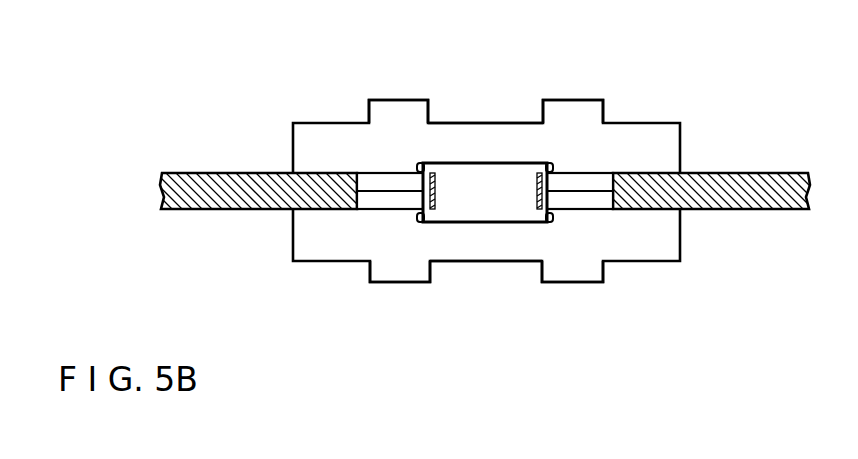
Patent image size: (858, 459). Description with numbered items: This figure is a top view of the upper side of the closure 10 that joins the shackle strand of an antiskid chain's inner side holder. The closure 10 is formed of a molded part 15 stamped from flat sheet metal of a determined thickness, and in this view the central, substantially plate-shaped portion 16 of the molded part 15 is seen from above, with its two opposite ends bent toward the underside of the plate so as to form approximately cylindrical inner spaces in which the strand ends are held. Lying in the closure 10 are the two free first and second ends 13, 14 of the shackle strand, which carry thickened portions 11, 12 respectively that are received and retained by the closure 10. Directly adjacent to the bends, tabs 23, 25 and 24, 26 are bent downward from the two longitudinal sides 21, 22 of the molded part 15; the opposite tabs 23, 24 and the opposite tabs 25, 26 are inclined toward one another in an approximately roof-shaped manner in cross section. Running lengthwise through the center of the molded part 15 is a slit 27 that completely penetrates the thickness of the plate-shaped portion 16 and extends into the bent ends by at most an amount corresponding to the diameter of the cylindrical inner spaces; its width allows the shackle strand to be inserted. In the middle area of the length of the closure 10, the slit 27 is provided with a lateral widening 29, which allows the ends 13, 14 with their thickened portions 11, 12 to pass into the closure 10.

The closure 10 is at (740, 86).
The thickened portion 11 is at (378, 202).
The thickened portion 12 is at (588, 200).
The first end 13 is at (205, 195).
The second end 14 is at (742, 207).
The molded part 15 is at (605, 155).
The plate-shaped portion 16 is at (452, 142).
The longitudinal side 21 is at (493, 122).
The longitudinal side 22 is at (492, 263).
The tab 23 is at (396, 100).
The tab 24 is at (407, 283).
The tab 25 is at (578, 100).
The tab 26 is at (567, 283).
The slit 27 is at (507, 195).
The lateral widening 29 is at (453, 218).